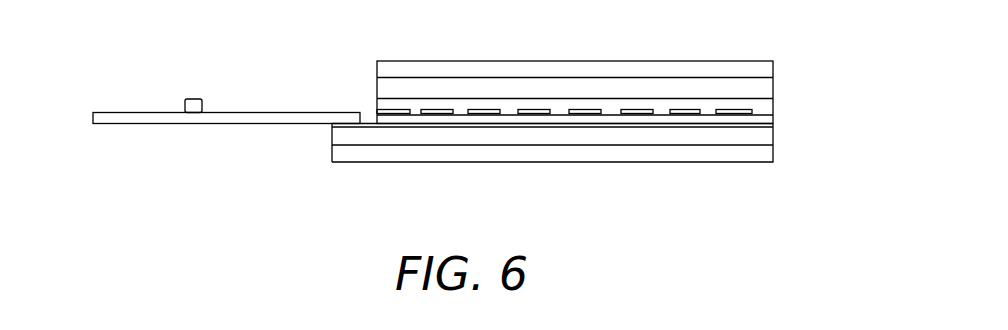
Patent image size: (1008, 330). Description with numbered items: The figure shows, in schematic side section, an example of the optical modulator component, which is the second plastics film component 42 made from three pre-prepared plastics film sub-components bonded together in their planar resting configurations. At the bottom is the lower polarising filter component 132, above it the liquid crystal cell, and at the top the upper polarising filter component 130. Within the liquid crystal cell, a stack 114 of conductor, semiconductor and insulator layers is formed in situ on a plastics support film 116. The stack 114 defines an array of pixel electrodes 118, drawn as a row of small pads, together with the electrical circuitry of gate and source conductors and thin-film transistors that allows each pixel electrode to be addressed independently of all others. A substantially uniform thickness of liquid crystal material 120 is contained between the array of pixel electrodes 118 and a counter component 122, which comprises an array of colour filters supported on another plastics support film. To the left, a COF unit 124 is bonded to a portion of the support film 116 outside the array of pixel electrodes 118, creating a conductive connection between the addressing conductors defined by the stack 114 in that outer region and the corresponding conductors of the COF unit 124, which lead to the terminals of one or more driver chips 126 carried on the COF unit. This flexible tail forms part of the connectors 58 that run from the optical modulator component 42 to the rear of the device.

The second plastics film component 42 is at (552, 74).
The connectors 58 is at (207, 132).
The stack 114 is at (767, 119).
The plastics support film 116 is at (328, 137).
The pixel electrodes 118 is at (682, 110).
The liquid crystal material 120 is at (767, 107).
The counter component 122 is at (594, 89).
The COF unit 124 is at (112, 118).
The driver chips 126 is at (193, 100).
The upper polarising filter component 130 is at (497, 70).
The lower polarising filter component 132 is at (356, 154).